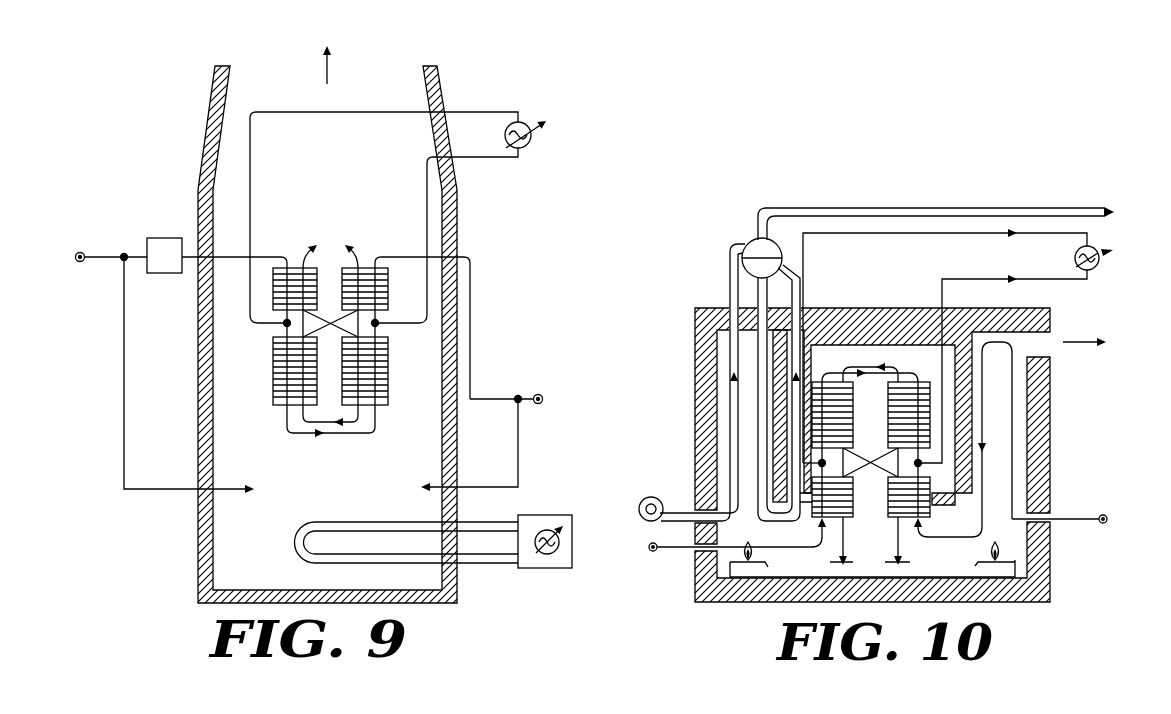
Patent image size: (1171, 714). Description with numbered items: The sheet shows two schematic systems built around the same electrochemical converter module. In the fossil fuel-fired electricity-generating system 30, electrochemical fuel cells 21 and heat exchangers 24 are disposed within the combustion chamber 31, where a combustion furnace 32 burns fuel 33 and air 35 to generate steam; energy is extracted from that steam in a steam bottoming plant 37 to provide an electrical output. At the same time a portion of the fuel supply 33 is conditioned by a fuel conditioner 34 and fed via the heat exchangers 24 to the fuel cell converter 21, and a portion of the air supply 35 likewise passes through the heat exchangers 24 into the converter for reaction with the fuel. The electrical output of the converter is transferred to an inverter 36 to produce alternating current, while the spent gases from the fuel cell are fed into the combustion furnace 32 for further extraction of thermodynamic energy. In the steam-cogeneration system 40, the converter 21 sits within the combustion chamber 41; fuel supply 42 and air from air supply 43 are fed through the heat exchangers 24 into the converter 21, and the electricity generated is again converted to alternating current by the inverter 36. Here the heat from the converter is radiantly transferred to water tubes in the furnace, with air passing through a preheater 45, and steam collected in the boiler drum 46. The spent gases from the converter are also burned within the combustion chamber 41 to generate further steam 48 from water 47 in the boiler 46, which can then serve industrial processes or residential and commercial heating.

In FIG. 9, the electrochemical fuel cells 21 is at (325, 373).
In FIG. 10, the electrochemical fuel cells 21 is at (870, 418).
In FIG. 9, the heat exchangers 24 is at (330, 289).
In FIG. 10, the heat exchangers 24 is at (873, 493).
In FIG. 9, the electricity-generating system 30 is at (183, 92).
In FIG. 9, the combustion chamber 31 is at (200, 523).
In FIG. 9, the combustion furnace 32 is at (248, 386).
In FIG. 9, the fuel supply 33 is at (103, 275).
In FIG. 9, the fuel conditioner 34 is at (176, 266).
In FIG. 9, the air supply 35 is at (467, 374).
In FIG. 9, the inverter 36 is at (411, 208).
In FIG. 10, the inverter 36 is at (968, 346).
In FIG. 9, the steam bottoming plant 37 is at (439, 562).
In FIG. 10, the cogeneration system 40 is at (938, 198).
In FIG. 10, the combustion chamber 41 is at (1047, 473).
In FIG. 10, the fuel supply 42 is at (729, 554).
In FIG. 10, the air supply 43 is at (1087, 510).
In FIG. 10, the preheater 45 is at (997, 390).
In FIG. 10, the boiler drum 46 is at (743, 253).
In FIG. 10, the water 47 is at (686, 382).
In FIG. 10, the steam 48 is at (950, 214).